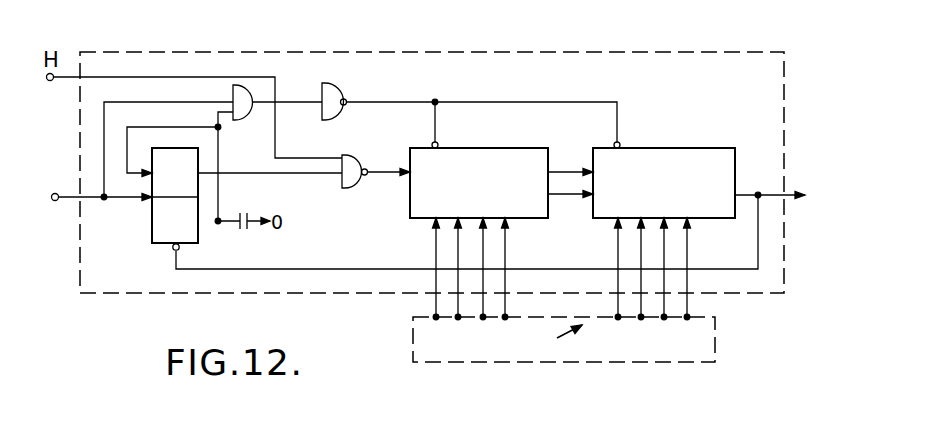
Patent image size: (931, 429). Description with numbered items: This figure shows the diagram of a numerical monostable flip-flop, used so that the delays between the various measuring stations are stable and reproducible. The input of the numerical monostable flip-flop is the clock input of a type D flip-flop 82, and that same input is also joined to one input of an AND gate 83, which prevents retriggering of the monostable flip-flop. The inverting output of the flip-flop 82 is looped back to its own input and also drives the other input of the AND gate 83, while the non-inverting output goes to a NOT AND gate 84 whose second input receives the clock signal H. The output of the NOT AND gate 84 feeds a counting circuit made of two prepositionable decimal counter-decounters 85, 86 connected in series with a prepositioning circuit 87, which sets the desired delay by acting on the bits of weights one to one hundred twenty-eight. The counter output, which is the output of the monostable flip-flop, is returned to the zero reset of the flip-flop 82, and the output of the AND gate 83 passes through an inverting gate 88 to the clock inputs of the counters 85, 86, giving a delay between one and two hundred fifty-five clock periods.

The type D flip-flop 82 is at (152, 228).
The AND gate 83 is at (246, 94).
The NOT AND gate 84 is at (356, 163).
The prepositionable decimal counter-decounter 85 is at (491, 153).
The prepositionable decimal counter-decounter 86 is at (665, 153).
The prepositioning circuit 87 is at (653, 362).
The inverting gate 88 is at (333, 91).